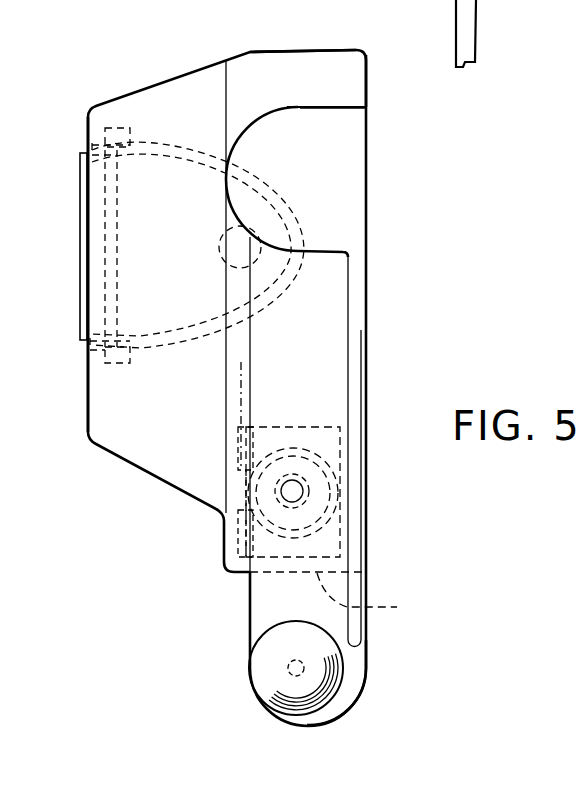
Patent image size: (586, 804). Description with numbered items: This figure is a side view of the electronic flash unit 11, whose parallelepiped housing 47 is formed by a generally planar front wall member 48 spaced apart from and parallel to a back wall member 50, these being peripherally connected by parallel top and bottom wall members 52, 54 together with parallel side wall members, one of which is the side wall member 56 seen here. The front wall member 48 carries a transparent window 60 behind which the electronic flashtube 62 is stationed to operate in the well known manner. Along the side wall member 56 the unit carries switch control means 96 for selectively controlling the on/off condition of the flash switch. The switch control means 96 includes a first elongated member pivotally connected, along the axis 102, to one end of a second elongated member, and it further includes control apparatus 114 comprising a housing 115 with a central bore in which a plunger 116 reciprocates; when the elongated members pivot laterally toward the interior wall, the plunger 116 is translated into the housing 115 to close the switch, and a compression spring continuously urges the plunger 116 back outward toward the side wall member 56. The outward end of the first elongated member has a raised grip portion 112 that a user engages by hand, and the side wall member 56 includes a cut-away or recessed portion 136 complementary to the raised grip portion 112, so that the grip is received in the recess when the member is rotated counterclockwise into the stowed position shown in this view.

The flash unit 11 is at (160, 74).
The front wall member 48 is at (85, 375).
The transparent window 60 is at (81, 188).
The top wall member 52 is at (299, 51).
The parallelepiped housing 47 is at (374, 74).
The back wall member 50 is at (367, 293).
The recessed portion 136 is at (240, 141).
The raised grip portion 112 is at (329, 164).
The electronic flashtube 62 is at (218, 247).
The side wall member 56 is at (250, 359).
The control apparatus 114 is at (300, 420).
The housing 115 is at (342, 457).
The plunger 116 is at (318, 514).
The bottom wall member 54 is at (337, 597).
The axis 102 is at (286, 667).
The switch control means 96 is at (392, 655).